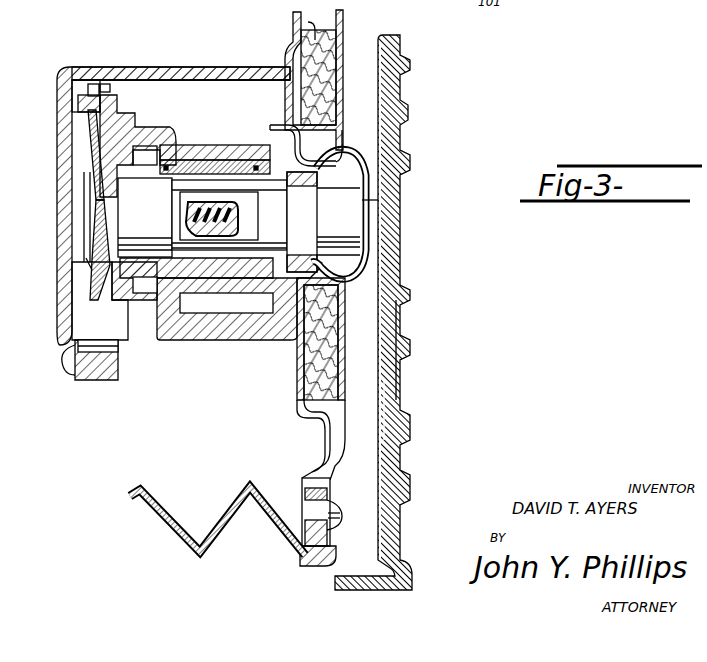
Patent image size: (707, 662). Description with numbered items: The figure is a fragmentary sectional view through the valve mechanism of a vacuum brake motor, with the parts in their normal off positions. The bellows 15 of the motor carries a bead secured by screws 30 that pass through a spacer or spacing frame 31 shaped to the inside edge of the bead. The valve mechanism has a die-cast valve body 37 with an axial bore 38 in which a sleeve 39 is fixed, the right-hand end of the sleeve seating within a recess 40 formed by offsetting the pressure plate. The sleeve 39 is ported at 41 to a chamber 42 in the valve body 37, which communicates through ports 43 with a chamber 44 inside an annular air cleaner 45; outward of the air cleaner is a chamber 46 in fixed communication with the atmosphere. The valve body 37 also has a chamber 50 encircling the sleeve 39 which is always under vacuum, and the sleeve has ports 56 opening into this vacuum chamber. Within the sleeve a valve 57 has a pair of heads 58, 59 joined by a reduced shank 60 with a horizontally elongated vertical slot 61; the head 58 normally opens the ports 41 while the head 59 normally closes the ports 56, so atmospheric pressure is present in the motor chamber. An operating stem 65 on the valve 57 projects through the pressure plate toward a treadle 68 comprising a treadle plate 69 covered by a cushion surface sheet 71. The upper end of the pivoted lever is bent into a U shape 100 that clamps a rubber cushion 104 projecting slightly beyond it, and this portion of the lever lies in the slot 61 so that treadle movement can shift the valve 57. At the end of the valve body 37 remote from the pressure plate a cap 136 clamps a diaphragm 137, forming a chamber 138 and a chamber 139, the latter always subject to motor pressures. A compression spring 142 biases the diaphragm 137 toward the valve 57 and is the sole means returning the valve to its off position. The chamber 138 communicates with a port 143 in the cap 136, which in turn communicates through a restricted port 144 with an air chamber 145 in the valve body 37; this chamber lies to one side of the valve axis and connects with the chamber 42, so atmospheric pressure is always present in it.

The bellows 15 is at (254, 488).
The screws 30 is at (336, 514).
The spacer or spacing frame 31 is at (306, 478).
The valve body 37 is at (255, 70).
The axial bore 38 is at (192, 148).
The sleeve 39 is at (250, 165).
The recess 40 is at (333, 152).
The ports 41 is at (282, 178).
The chamber 42 is at (272, 124).
The ports 43 is at (282, 125).
The chamber 44 is at (325, 135).
The annular air cleaner 45 is at (340, 36).
The chamber 46 is at (302, 12).
The chamber 50 is at (148, 146).
The ports 56 is at (145, 217).
The valve 57 is at (348, 202).
The head 58 is at (322, 230).
The head 59 is at (152, 234).
The reduced shank 60 is at (276, 196).
The vertical slot 61 is at (283, 226).
The operating stem 65 is at (366, 216).
The treadle 68 is at (403, 116).
The treadle plate 69 is at (384, 394).
The cushion surface sheet 71 is at (408, 352).
The U-shaped upper end portion of the lever 100 is at (190, 207).
The rubber cushion 104 is at (238, 211).
The cap 136 is at (64, 214).
The diaphragm 137 is at (100, 287).
The chamber 138 is at (80, 133).
The chamber 139 is at (105, 316).
The compression spring 142 is at (75, 172).
The port 143 is at (76, 90).
The restricted port 144 is at (104, 83).
The air chamber 145 is at (185, 85).